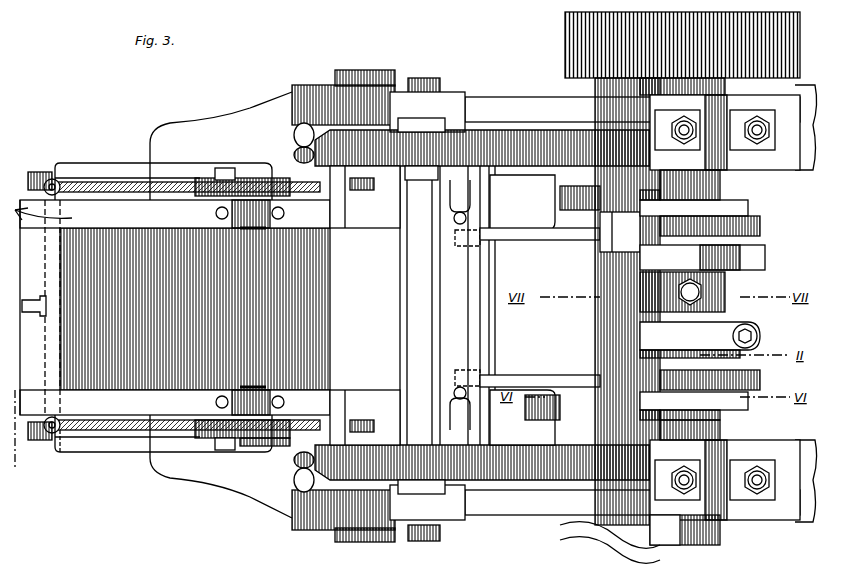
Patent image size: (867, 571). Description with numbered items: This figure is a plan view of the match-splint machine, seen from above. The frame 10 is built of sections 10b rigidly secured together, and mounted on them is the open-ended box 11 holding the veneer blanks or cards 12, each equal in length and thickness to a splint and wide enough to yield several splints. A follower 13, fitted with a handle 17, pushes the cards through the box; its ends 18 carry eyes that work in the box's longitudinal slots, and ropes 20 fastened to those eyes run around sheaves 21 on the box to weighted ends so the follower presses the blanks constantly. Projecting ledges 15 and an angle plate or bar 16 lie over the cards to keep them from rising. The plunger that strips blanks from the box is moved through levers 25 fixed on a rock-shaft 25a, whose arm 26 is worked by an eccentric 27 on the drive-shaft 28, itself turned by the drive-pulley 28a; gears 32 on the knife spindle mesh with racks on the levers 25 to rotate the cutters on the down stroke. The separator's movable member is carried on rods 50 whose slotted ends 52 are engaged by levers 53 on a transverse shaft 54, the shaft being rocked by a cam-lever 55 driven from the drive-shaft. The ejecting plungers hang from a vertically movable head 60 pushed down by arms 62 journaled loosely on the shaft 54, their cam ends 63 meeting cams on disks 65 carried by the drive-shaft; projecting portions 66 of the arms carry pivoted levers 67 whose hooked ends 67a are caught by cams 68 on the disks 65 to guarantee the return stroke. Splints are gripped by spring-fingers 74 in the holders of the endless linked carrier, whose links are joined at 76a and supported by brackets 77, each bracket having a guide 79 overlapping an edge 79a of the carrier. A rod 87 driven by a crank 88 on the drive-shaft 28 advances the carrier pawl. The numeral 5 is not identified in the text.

The frame end 5 is at (28, 182).
The frame 10 is at (432, 303).
The sections 10b is at (482, 148).
The open-ended box 11 is at (13, 436).
The veneer blanks or cards 12 is at (142, 232).
The follower 13 is at (48, 350).
The projecting ledges 15 is at (175, 401).
The angle plate or bar 16 is at (392, 204).
The handle 17 is at (36, 316).
The ends of the follower 18 is at (66, 449).
The ropes 20 is at (113, 182).
The sheaves 21 is at (243, 178).
The levers 25 is at (498, 104).
The rock-shaft 25a is at (610, 280).
The arm 26 is at (590, 340).
The eccentric 27 is at (728, 330).
The drive-shaft 28 is at (710, 176).
The drive-pulley 28a is at (565, 43).
The gears 32 is at (308, 85).
The rods 50 is at (262, 446).
The slots 52 is at (535, 190).
The levers 53 is at (568, 186).
The transverse shaft 54 is at (600, 314).
The cam-lever 55 is at (765, 258).
The vertical movable head 60 is at (490, 282).
The levers or arms 62 is at (525, 232).
The cam ends 63 is at (542, 406).
The disks 65 is at (760, 228).
The projecting portions 66 is at (582, 232).
The levers 67 is at (720, 405).
The hooked ends 67a is at (748, 208).
The cams 68 is at (652, 196).
The spring-fingers 74 is at (440, 430).
The joints of the carrier 76a is at (42, 172).
The brackets 77 is at (218, 124).
The guide 79 is at (294, 128).
The edge of the carrier 79a is at (187, 176).
The rod 87 is at (598, 540).
The crank 88 is at (720, 538).